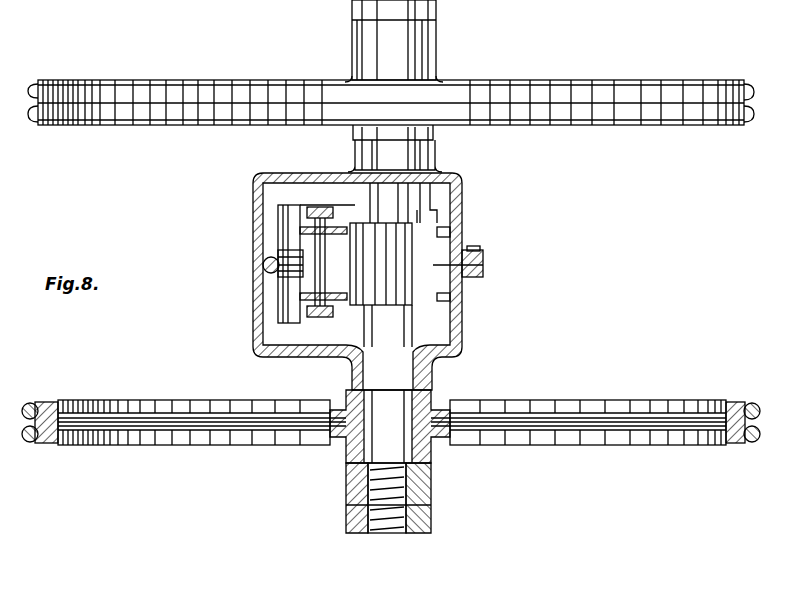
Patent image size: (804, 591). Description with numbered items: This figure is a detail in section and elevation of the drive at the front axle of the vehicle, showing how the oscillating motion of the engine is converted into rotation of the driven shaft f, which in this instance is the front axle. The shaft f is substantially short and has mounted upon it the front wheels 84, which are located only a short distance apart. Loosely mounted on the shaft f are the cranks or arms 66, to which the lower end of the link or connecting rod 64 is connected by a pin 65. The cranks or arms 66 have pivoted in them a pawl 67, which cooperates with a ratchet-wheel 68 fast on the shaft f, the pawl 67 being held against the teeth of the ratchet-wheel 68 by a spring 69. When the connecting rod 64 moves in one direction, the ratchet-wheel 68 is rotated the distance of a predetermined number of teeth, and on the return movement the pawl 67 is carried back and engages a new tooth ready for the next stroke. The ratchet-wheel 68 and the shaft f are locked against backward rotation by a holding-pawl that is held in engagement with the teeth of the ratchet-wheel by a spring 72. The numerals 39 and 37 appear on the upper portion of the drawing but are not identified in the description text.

The front wheels 84 is at (542, 126).
The pin 65 is at (259, 196).
The cranks or arms 66 is at (282, 222).
The link or connecting rod 64 is at (265, 265).
The spring 69 is at (313, 208).
The pawl 67 is at (352, 295).
The ratchet-wheel 68 is at (412, 250).
The spring 72 is at (440, 226).
The shaft 39 is at (436, 41).
The shaft section 37 is at (201, 5).
The driven shaft f is at (430, 488).